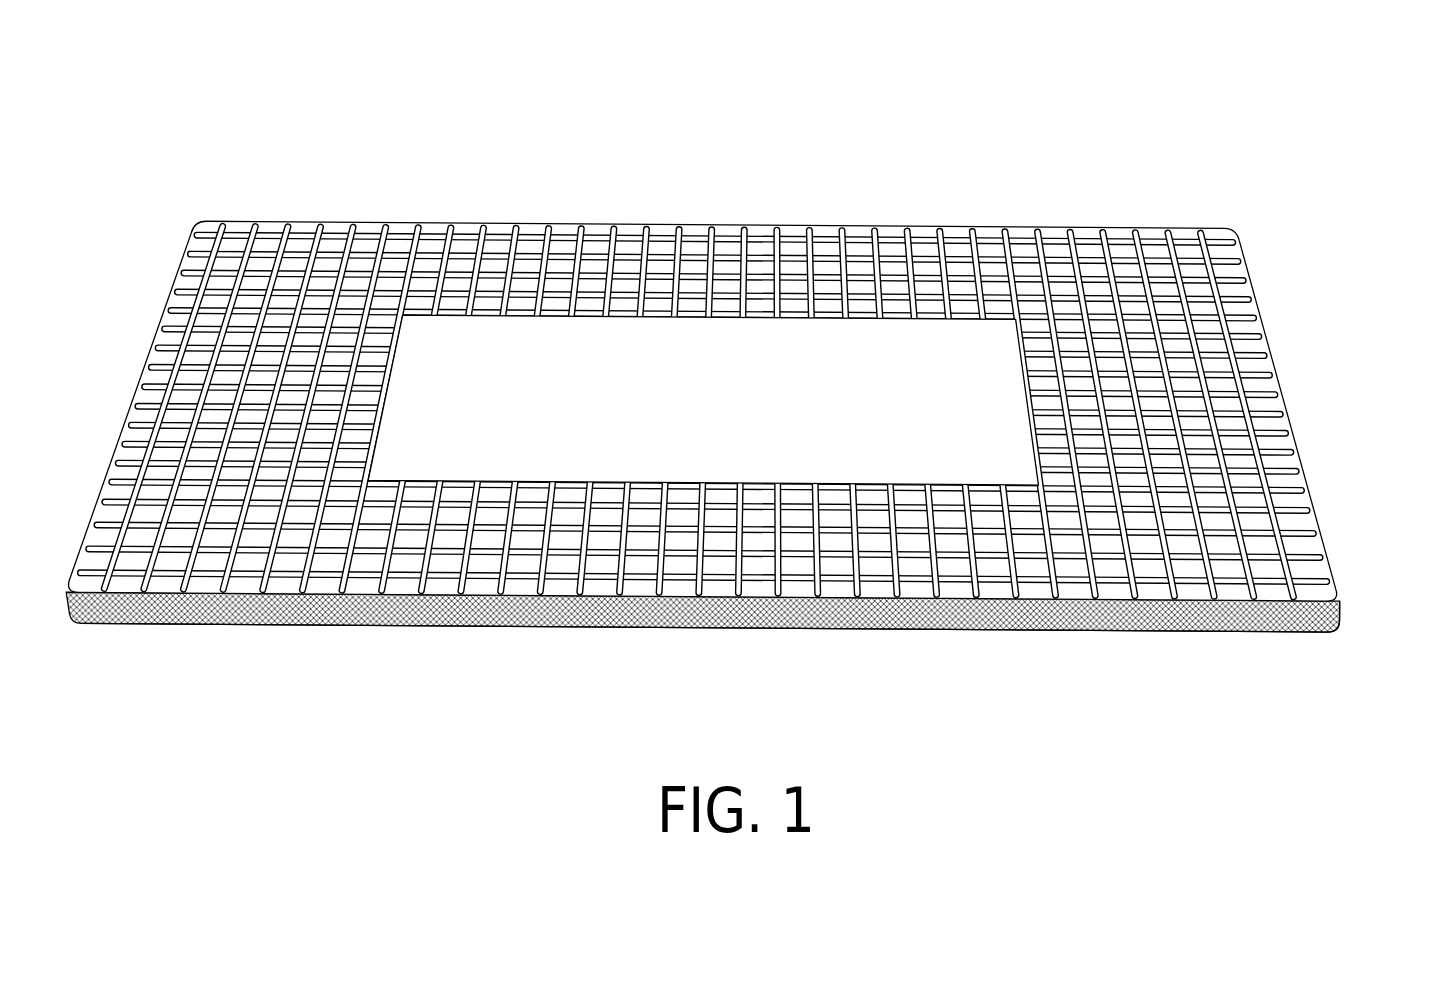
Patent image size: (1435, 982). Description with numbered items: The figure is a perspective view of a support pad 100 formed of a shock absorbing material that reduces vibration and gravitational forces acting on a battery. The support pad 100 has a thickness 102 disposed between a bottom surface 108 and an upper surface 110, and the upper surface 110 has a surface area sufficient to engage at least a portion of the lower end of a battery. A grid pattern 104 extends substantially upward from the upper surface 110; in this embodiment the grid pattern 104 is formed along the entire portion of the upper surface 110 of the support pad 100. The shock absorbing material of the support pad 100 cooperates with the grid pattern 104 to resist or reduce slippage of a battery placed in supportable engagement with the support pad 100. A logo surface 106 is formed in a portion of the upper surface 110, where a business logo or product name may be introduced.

The support pad 100 is at (1026, 92).
The thickness 102 is at (1178, 622).
The grid pattern 104 is at (1028, 557).
The logo surface 106 is at (832, 463).
The bottom surface 108 is at (1300, 633).
The upper surface 110 is at (1317, 601).